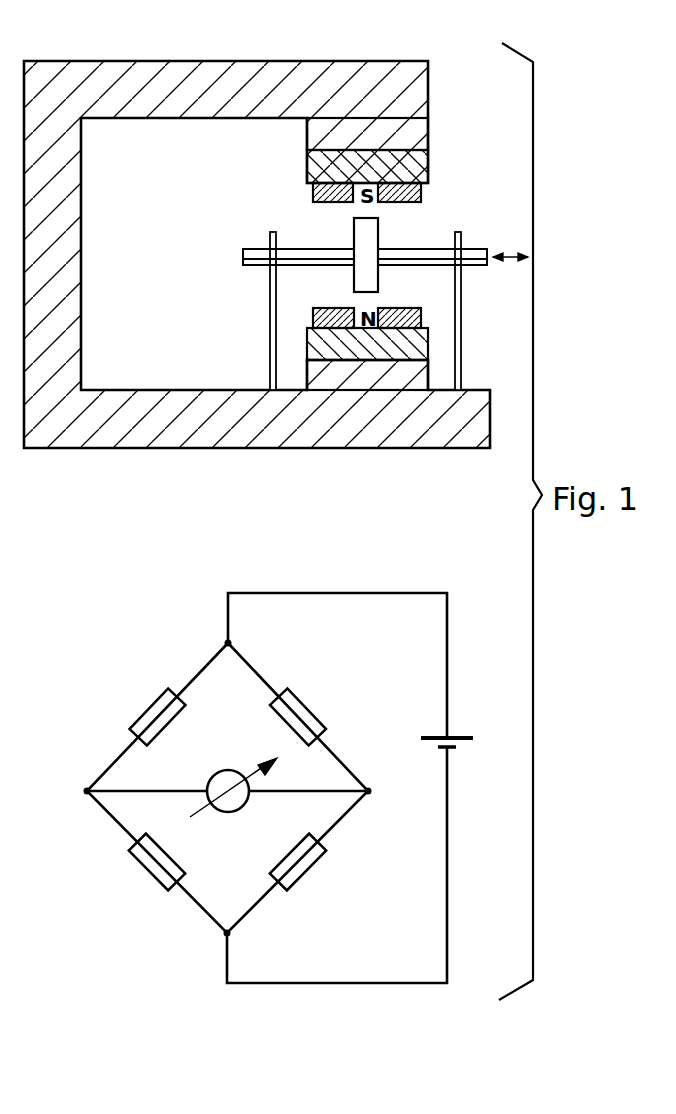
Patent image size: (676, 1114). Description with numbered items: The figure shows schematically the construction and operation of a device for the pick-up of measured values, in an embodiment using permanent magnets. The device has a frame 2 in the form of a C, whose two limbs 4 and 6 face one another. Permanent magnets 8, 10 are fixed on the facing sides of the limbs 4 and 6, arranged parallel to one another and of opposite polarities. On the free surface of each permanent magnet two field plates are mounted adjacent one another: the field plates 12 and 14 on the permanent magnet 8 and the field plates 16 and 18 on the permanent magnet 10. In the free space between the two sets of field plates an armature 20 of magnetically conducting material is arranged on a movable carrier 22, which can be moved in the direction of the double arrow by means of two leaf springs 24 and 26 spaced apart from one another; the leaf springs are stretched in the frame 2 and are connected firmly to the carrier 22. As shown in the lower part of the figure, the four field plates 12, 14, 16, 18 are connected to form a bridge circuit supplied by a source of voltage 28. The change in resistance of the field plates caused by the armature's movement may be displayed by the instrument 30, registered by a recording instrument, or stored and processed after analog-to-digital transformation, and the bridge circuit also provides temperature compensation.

The frame 2 is at (216, 58).
The limb 4 is at (325, 128).
The limb 6 is at (318, 375).
The permanent magnet 8 is at (318, 162).
The permanent magnet 10 is at (318, 342).
The field plate 12 is at (422, 193).
The field plate 14 is at (313, 192).
The field plate 16 is at (396, 308).
The field plate 18 is at (334, 308).
The armature 20 is at (378, 235).
The movable carrier 22 is at (475, 252).
The leaf spring 24 is at (461, 303).
The leaf spring 26 is at (270, 295).
The source of voltage 28 is at (450, 737).
The instrument 30 is at (237, 802).